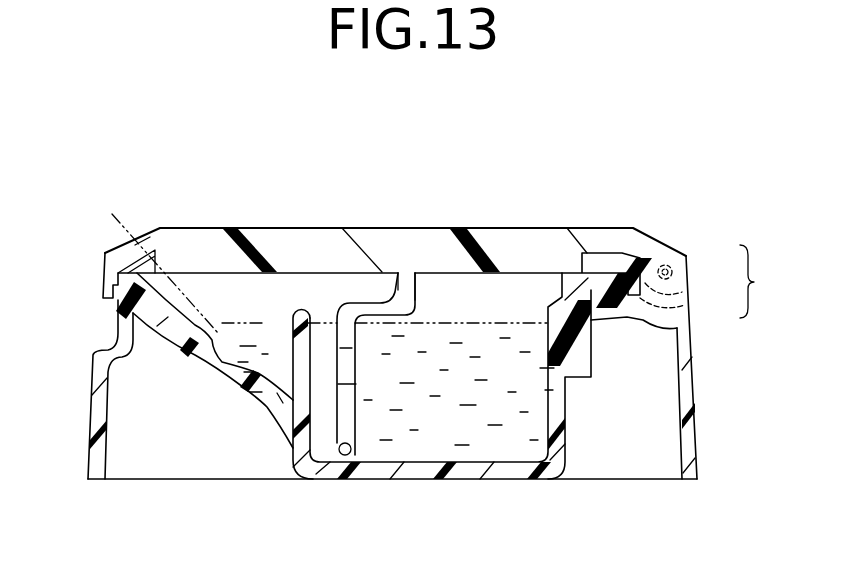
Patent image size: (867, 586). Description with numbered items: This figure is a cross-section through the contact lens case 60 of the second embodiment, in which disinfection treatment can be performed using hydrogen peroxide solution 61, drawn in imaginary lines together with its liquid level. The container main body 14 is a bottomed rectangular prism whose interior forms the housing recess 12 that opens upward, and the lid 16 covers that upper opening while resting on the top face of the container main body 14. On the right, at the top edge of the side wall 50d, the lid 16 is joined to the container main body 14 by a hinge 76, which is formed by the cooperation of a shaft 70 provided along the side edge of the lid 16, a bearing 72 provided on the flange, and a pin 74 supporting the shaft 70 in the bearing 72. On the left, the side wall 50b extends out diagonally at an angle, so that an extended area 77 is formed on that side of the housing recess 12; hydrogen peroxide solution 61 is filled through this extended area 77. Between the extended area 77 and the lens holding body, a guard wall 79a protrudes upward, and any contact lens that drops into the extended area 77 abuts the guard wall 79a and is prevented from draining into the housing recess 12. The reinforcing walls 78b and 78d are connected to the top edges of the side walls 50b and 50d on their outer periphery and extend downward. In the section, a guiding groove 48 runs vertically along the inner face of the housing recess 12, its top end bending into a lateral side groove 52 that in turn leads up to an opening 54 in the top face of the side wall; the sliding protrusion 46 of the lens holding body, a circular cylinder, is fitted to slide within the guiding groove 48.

The housing recess 12 is at (541, 390).
The container main body 14 is at (703, 462).
The lid 16 is at (206, 244).
The sliding protrusion 46 is at (347, 456).
The guiding groove 48 is at (340, 380).
The side wall 50b is at (212, 373).
The side wall 50d is at (572, 356).
The side groove 52 is at (381, 305).
The opening 54 is at (411, 290).
The contact lens case 60 is at (681, 186).
The hydrogen peroxide solution 61 is at (151, 267).
The shaft 70 is at (675, 290).
The bearing 72 is at (672, 309).
The pin 74 is at (684, 268).
The hinge 76 is at (688, 281).
The extended area 77 is at (227, 311).
The reinforcing wall 78b is at (100, 427).
The reinforcing wall 78d is at (693, 425).
The guard wall 79a is at (300, 370).